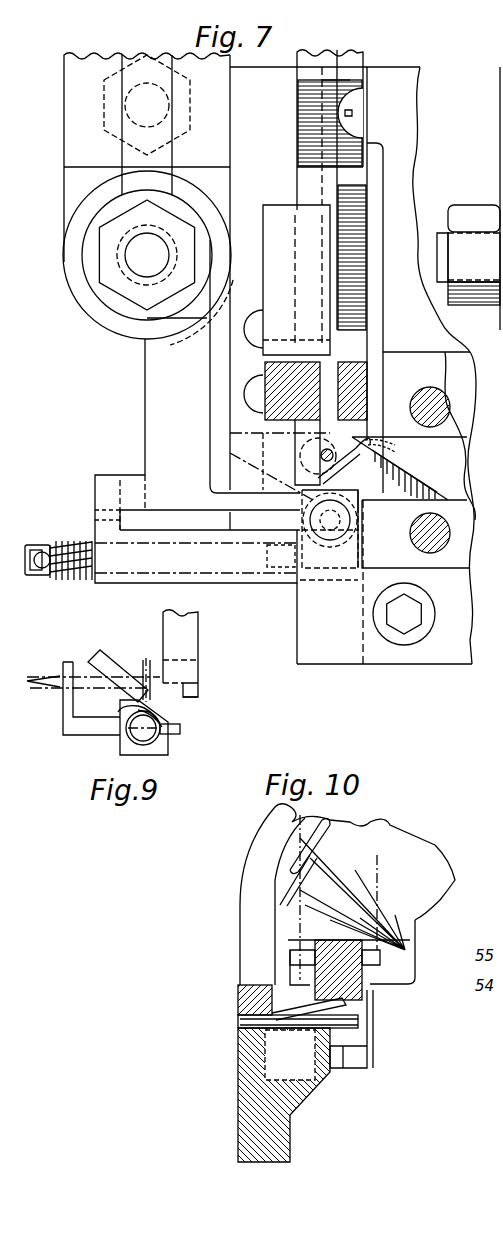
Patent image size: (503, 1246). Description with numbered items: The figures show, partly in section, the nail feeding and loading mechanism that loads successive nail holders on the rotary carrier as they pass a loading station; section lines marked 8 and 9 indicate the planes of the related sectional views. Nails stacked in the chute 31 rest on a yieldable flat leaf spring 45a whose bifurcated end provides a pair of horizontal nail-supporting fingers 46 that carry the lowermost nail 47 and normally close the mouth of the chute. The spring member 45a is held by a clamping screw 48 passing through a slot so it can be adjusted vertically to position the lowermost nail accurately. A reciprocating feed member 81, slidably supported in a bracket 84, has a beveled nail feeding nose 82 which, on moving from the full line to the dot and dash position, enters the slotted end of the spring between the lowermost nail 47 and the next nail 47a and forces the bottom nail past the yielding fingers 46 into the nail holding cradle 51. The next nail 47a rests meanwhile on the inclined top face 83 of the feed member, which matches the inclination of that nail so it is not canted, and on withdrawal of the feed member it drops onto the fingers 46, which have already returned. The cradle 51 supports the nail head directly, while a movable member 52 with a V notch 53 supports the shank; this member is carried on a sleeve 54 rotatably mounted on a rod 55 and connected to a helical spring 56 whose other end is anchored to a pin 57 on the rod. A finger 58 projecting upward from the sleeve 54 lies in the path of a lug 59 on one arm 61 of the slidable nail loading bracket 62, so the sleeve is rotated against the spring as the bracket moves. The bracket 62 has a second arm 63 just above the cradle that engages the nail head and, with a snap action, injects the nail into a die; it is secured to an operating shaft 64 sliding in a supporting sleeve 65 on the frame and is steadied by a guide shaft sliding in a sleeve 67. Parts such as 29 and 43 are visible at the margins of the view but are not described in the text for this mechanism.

In FIG. 7, the section line 8- 8 is at (330, 175).
In FIG. 7, the section line 9- 9 is at (35, 445).
In FIG. 7, the spindle 29 is at (334, 43).
In FIG. 7, the chute 31 is at (362, 40).
In FIG. 7, the support 43 is at (502, 712).
In FIG. 7, the flat leaf spring 45a is at (368, 381).
In FIG. 10, the flat leaf spring 45a is at (378, 888).
In FIG. 7, the nail-supporting fingers 46 is at (350, 455).
In FIG. 10, the nail-supporting fingers 46 is at (290, 962).
In FIG. 7, the lowermost nail 47 is at (320, 455).
In FIG. 10, the lowermost nail 47 is at (372, 978).
In FIG. 10, the next nail 47a is at (406, 947).
In FIG. 7, the clamping screw 48 is at (345, 109).
In FIG. 7, the nail holding cradle 51 is at (308, 540).
In FIG. 10, the nail holding cradle 51 is at (278, 1020).
In FIG. 7, the movable member 52 is at (358, 548).
In FIG. 9, the movable member 52 is at (64, 700).
In FIG. 10, the movable member 52 is at (370, 1020).
In FIG. 7, the V notch 53 is at (348, 526).
In FIG. 7, the sleeve 54 is at (232, 580).
In FIG. 9, the sleeve 54 is at (120, 748).
In FIG. 10, the sleeve 54 is at (300, 1085).
In FIG. 7, the rod 55 is at (45, 545).
In FIG. 9, the rod 55 is at (150, 737).
In FIG. 10, the rod 55 is at (240, 1075).
In FIG. 7, the helical spring 56 is at (78, 578).
In FIG. 9, the helical spring 56 is at (120, 712).
In FIG. 7, the pin 57 is at (46, 575).
In FIG. 9, the pin 57 is at (180, 729).
In FIG. 7, the finger 58 is at (120, 531).
In FIG. 9, the finger 58 is at (107, 662).
In FIG. 10, the finger 58 is at (312, 1002).
In FIG. 7, the lug 59 is at (492, 572).
In FIG. 9, the lug 59 is at (192, 698).
In FIG. 10, the lug 59 is at (240, 1020).
In FIG. 7, the arm 61 is at (108, 482).
In FIG. 7, the slidable nail loading bracket 62 is at (160, 381).
In FIG. 9, the slidable nail loading bracket 62 is at (190, 621).
In FIG. 7, the second arm 63 is at (260, 492).
In FIG. 9, the second arm 63 is at (200, 656).
In FIG. 10, the second arm 63 is at (240, 995).
In FIG. 7, the operating shaft 64 is at (140, 266).
In FIG. 7, the supporting sleeve 65 is at (64, 270).
In FIG. 7, the sleeve 67 is at (66, 101).
In FIG. 7, the reciprocating feed member 81 is at (415, 468).
In FIG. 10, the reciprocating feed member 81 is at (365, 985).
In FIG. 7, the beveled nail feeding nose 82 is at (393, 470).
In FIG. 10, the top face 83 is at (340, 945).
In FIG. 7, the bracket 84 is at (462, 372).